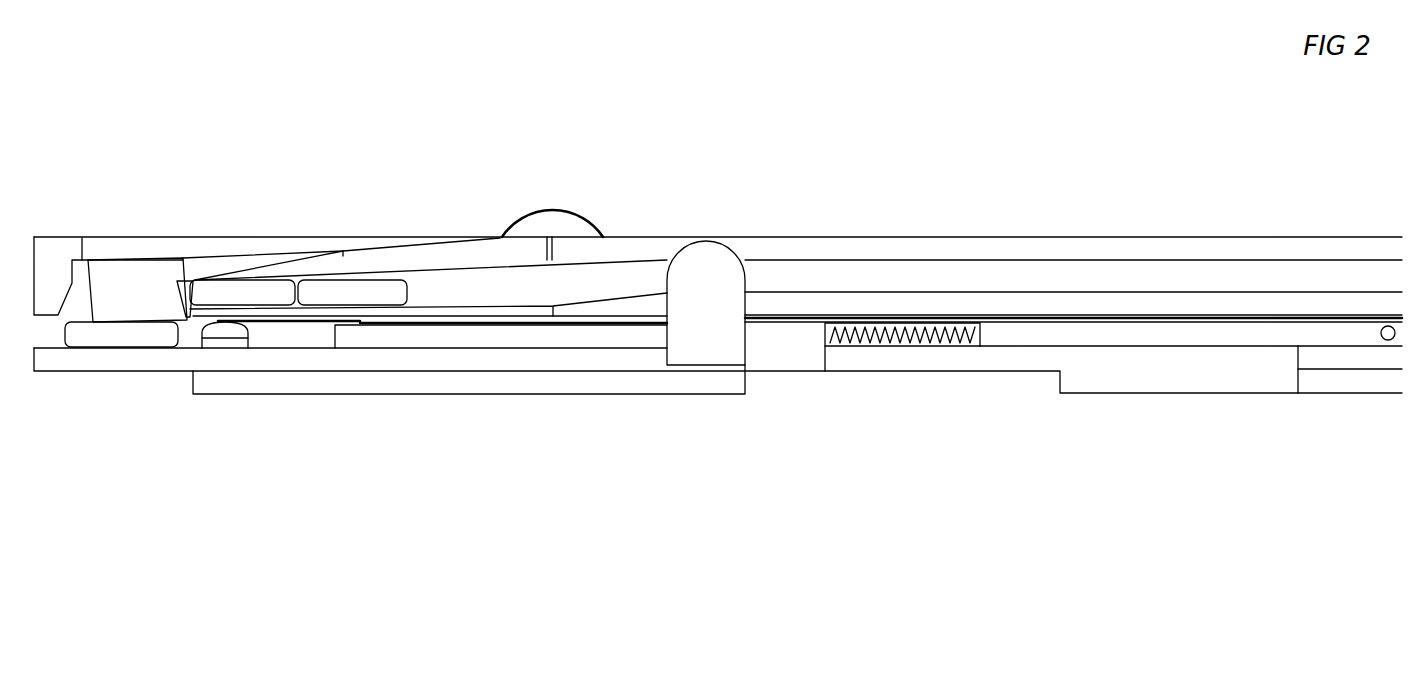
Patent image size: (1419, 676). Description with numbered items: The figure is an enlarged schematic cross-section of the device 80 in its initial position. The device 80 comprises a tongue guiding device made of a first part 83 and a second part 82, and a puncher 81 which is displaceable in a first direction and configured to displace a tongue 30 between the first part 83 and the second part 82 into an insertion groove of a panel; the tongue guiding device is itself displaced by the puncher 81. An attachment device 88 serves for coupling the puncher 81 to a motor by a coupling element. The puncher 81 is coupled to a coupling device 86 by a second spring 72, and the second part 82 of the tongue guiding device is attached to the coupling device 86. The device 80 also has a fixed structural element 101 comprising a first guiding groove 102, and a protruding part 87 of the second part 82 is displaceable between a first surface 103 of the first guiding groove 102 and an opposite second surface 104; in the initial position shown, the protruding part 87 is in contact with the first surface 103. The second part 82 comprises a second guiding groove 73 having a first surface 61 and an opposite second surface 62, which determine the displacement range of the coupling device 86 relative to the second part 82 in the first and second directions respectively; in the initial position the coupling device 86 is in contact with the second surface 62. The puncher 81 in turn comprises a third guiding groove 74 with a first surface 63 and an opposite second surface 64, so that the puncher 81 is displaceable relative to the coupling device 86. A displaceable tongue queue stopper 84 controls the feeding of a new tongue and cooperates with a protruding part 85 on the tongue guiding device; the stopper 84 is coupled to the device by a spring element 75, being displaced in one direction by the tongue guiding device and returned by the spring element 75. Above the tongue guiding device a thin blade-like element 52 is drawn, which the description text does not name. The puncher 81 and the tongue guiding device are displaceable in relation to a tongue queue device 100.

The device 80 is at (808, 106).
The tongue queue stopper 84 is at (133, 275).
The tongue 30 is at (137, 342).
The leaf spring blade 52 is at (440, 281).
The spring element 75 is at (568, 210).
The first part of the tongue guiding device 83 is at (290, 322).
The second part of the tongue guiding device 82 is at (358, 360).
The puncher 81 is at (508, 340).
The first surface of the second guiding groove 61 is at (508, 350).
The second guiding groove 73 is at (600, 362).
The first surface of the third guiding groove 63 is at (663, 340).
The protruding part on the tongue guiding device 85 is at (713, 343).
The fixed structural element 101 is at (733, 387).
The second surface of the first guiding groove 104 is at (747, 377).
The second surface of the second guiding groove 62 is at (825, 365).
The first guiding groove 102 is at (877, 387).
The second surface of the third guiding groove 64 is at (980, 325).
The protruding part of the second part 87 is at (1150, 383).
The first surface of the first guiding groove 103 is at (1298, 382).
The coupling device 86 is at (760, 335).
The third guiding groove 74 is at (847, 325).
The second spring 72 is at (943, 335).
The tongue queue device 100 is at (1118, 248).
The attachment device 88 is at (1388, 326).